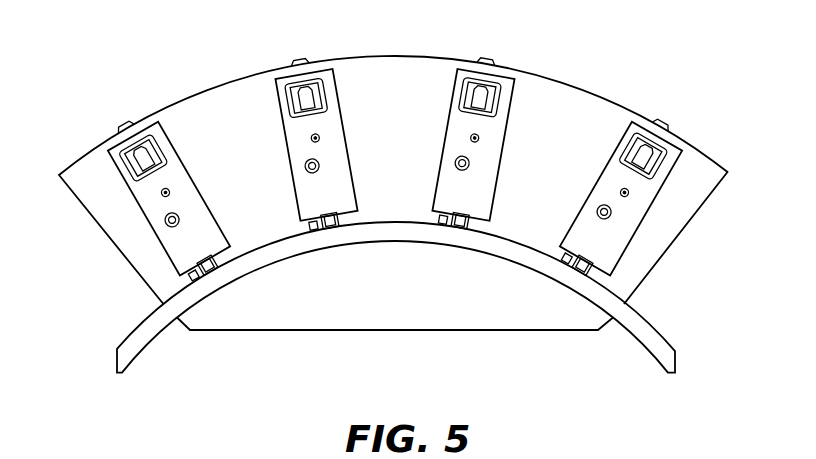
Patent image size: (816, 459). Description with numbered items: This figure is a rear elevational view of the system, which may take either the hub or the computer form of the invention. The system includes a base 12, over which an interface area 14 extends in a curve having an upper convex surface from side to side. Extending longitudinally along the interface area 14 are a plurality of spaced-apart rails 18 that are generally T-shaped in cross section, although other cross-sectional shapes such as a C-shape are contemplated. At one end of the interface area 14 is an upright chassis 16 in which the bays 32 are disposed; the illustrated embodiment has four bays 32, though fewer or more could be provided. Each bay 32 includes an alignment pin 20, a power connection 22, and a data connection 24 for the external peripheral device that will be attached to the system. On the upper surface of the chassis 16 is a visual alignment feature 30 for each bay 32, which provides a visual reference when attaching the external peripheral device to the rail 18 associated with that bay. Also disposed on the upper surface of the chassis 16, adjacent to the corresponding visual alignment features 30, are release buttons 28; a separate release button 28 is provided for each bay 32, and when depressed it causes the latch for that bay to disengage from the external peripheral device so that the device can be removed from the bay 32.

The base 12 is at (416, 296).
The interface area 14 is at (415, 222).
The upright chassis 16 is at (403, 97).
The rail 18 is at (562, 250).
The alignment pin 20 is at (626, 192).
The power connection 22 is at (598, 207).
The data connection 24 is at (659, 150).
The release button 28 is at (654, 117).
The visual alignment feature 30 is at (489, 53).
The bay 32 is at (177, 148).